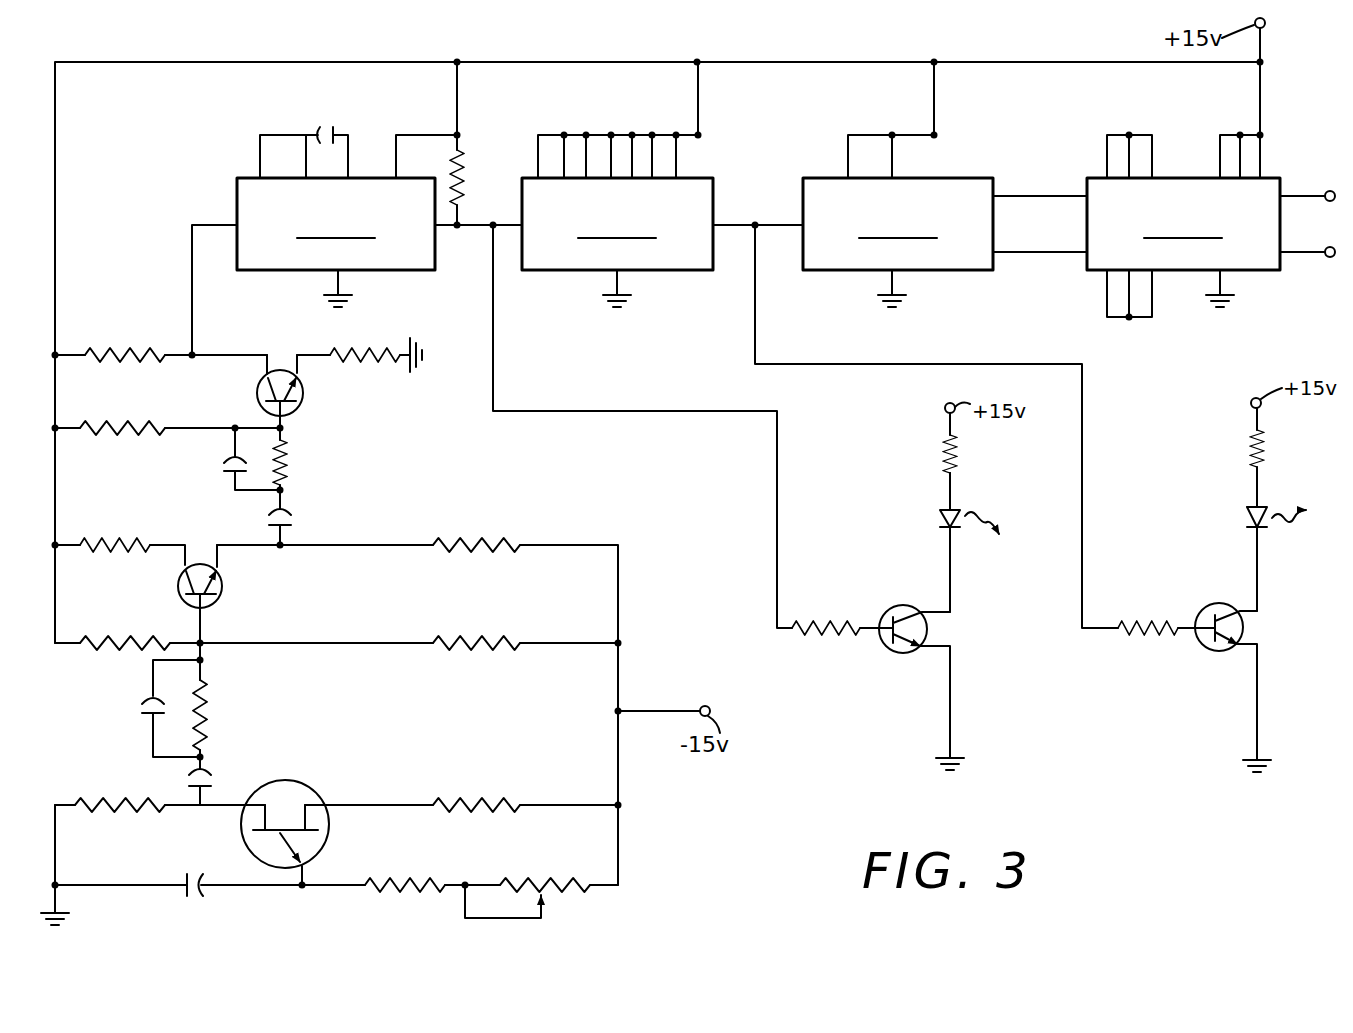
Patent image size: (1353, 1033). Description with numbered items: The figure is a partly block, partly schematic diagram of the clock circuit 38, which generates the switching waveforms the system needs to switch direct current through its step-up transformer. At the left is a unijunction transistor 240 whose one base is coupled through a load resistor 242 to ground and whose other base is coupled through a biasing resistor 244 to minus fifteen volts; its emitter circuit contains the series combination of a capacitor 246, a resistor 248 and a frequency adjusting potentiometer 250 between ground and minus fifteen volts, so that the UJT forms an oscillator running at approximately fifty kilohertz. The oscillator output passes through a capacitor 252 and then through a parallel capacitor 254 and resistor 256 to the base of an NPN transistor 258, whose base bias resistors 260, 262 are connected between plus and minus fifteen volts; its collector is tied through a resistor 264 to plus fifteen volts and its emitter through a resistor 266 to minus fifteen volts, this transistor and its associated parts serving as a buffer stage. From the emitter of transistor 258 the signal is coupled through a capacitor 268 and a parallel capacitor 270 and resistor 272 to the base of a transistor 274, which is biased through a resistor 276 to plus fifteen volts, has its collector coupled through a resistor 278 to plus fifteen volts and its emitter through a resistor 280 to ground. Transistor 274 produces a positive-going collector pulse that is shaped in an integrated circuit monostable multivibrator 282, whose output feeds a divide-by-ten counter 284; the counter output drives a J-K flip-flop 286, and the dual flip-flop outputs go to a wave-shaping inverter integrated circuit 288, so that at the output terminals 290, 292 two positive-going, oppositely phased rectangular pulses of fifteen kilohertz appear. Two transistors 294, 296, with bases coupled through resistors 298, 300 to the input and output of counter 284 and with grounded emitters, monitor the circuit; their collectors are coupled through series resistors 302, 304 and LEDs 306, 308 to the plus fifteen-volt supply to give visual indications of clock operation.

The clock circuit 38 is at (680, 44).
The unijunction transistor 240 is at (293, 768).
The load resistor 242 is at (108, 805).
The biasing resistor 244 is at (483, 804).
The capacitor 246 is at (193, 872).
The resistor 248 is at (395, 882).
The frequency adjusting potentiometer 250 is at (558, 845).
The capacitor 252 is at (213, 770).
The capacitor 254 is at (143, 712).
The resistor 256 is at (208, 716).
The NPN transistor 258 is at (232, 591).
The base bias resistor 260 is at (118, 646).
The base bias resistor 262 is at (482, 649).
The resistor 264 is at (133, 547).
The resistor 266 is at (489, 548).
The capacitor 268 is at (293, 526).
The capacitor 270 is at (227, 463).
The resistor 272 is at (288, 470).
The transistor 274 is at (312, 399).
The resistor 276 is at (149, 426).
The resistor 278 is at (132, 352).
The resistor 280 is at (357, 352).
The integrated circuit monostable multivibrator 282 is at (347, 217).
The divide-by-ten counter 284 is at (617, 184).
The J-K flip-flop 286 is at (898, 184).
The wave-shaping inverter integrated circuit 288 is at (1183, 226).
The output terminal 290 is at (1332, 190).
The output terminal 292 is at (1332, 258).
The transistor 294 is at (975, 634).
The transistor 296 is at (1272, 632).
The resistor 298 is at (836, 632).
The resistor 300 is at (1150, 632).
The series resistor 302 is at (943, 450).
The series resistor 304 is at (1250, 450).
The LED 306 is at (940, 519).
The LED 308 is at (1250, 520).